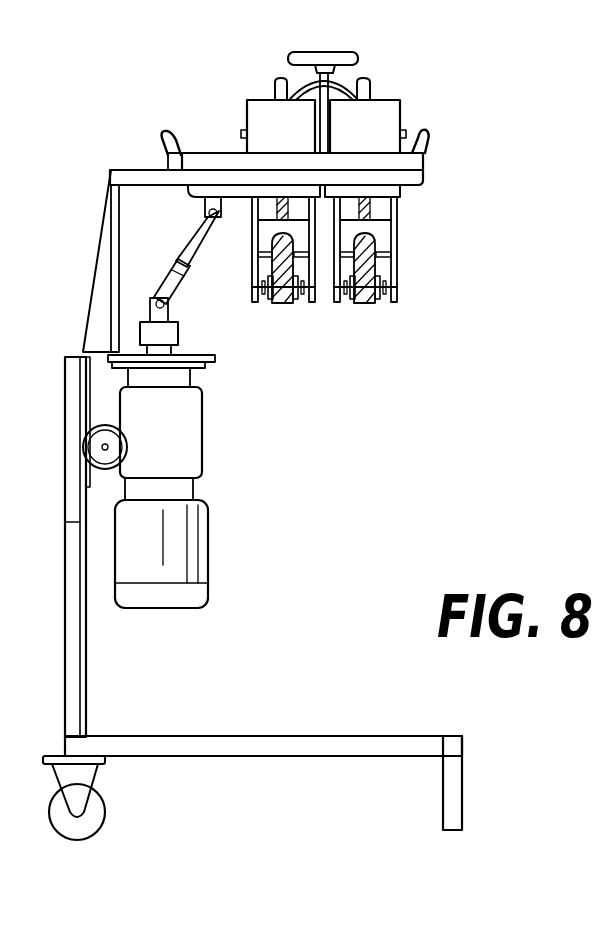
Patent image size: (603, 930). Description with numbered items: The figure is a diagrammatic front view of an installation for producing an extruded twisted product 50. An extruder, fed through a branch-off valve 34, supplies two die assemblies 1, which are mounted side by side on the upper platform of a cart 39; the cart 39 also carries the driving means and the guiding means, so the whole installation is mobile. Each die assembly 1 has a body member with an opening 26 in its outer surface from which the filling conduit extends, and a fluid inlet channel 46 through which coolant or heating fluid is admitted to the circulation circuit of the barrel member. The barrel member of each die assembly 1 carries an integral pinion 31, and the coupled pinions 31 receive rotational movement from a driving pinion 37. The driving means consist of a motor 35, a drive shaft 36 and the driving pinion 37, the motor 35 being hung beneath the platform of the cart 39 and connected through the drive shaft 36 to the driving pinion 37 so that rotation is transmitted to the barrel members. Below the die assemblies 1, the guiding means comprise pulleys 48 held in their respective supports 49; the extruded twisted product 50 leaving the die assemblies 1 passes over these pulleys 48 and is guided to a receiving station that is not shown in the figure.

The die assembly 1 is at (260, 113).
The opening in the body member outer surface 26 is at (276, 80).
The pinion 31 is at (250, 188).
The branch-off valve 34 is at (343, 53).
The motor 35 is at (177, 532).
The drive shaft 36 is at (197, 242).
The driving pinion 37 is at (190, 197).
The cart 39 is at (86, 674).
The fluid inlet channel 46 is at (246, 135).
The pulley 48 is at (272, 292).
The support 49 is at (322, 270).
The extruded twisted product 50 is at (284, 304).